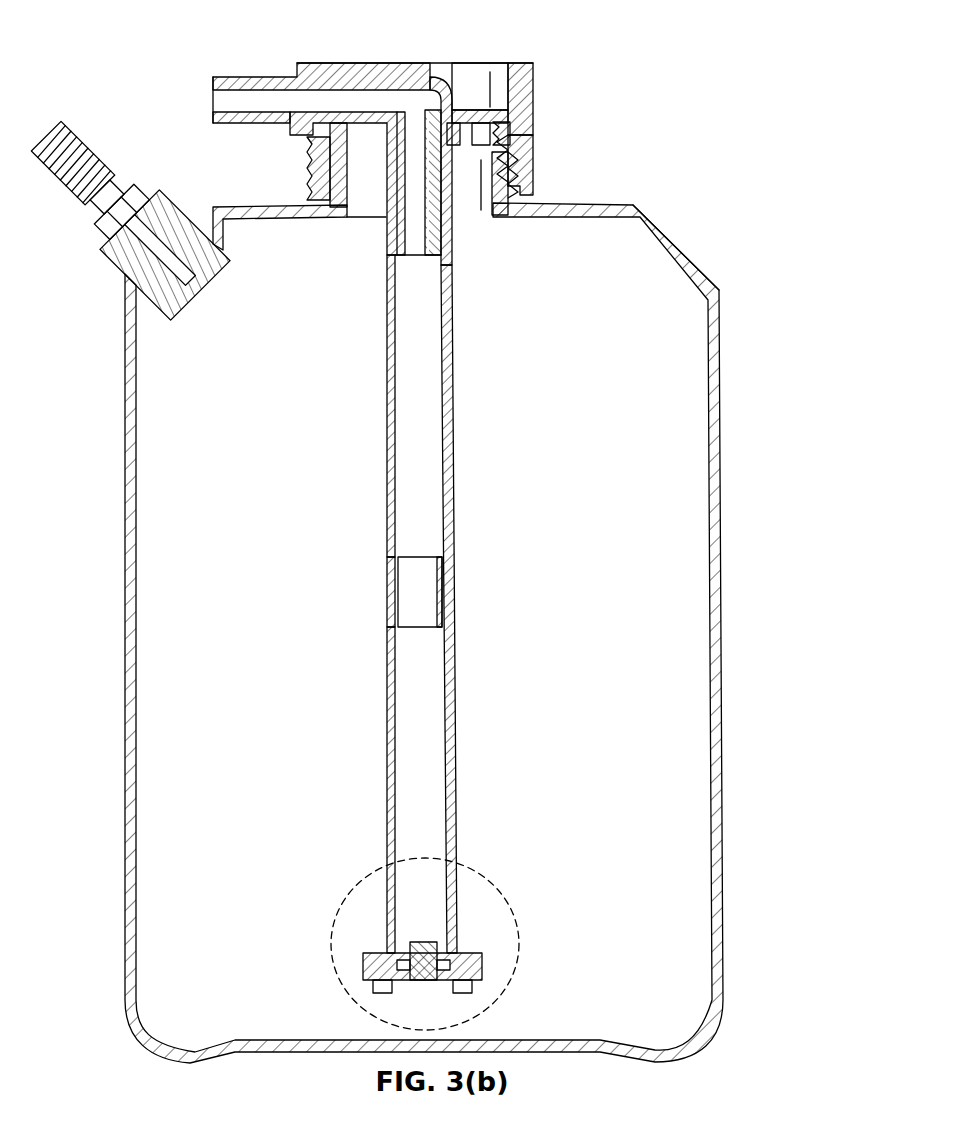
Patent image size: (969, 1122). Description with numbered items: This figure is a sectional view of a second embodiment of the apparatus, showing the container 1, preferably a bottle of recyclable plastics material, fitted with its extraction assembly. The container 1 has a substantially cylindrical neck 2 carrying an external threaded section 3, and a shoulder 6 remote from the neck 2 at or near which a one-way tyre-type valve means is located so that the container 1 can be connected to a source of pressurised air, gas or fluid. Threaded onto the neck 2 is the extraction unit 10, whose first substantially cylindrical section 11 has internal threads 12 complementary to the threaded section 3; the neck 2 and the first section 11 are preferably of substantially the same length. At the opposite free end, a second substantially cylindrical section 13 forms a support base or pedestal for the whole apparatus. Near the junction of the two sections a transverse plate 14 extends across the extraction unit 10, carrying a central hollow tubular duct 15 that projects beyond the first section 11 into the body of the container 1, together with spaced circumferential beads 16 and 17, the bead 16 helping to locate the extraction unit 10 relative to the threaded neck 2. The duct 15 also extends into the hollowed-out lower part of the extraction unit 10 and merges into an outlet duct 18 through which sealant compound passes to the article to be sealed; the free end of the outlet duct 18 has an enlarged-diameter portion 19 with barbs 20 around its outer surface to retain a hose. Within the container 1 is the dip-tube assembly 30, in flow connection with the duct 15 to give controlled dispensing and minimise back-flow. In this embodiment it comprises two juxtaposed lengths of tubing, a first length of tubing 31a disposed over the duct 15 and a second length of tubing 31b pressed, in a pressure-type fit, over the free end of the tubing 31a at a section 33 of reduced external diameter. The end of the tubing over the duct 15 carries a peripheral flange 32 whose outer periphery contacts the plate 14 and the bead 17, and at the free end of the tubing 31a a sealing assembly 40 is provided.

The container 1 is at (727, 780).
The neck 2 is at (315, 182).
The external threaded section 3 is at (315, 152).
The shoulder 6 is at (678, 250).
The extraction unit 10 is at (549, 60).
The first substantially cylindrical section 11 is at (536, 192).
The internal threads 12 is at (536, 165).
The second substantially cylindrical section 13 is at (536, 80).
The transverse plate 14 is at (536, 110).
The tubular duct 15 is at (536, 147).
The bead 16 is at (498, 128).
The bead 17 is at (371, 128).
The outlet duct 18 is at (203, 95).
The enlarged-diameter portion 19 is at (227, 76).
The barbs 20 is at (217, 130).
The dip-tube assembly 30 is at (484, 472).
The first length of tubing 31a is at (452, 372).
The second length of tubing 31b is at (452, 657).
The peripheral flange 32 is at (457, 122).
The reduced external diameter section 33 is at (452, 580).
The sealing assembly 40 is at (484, 965).